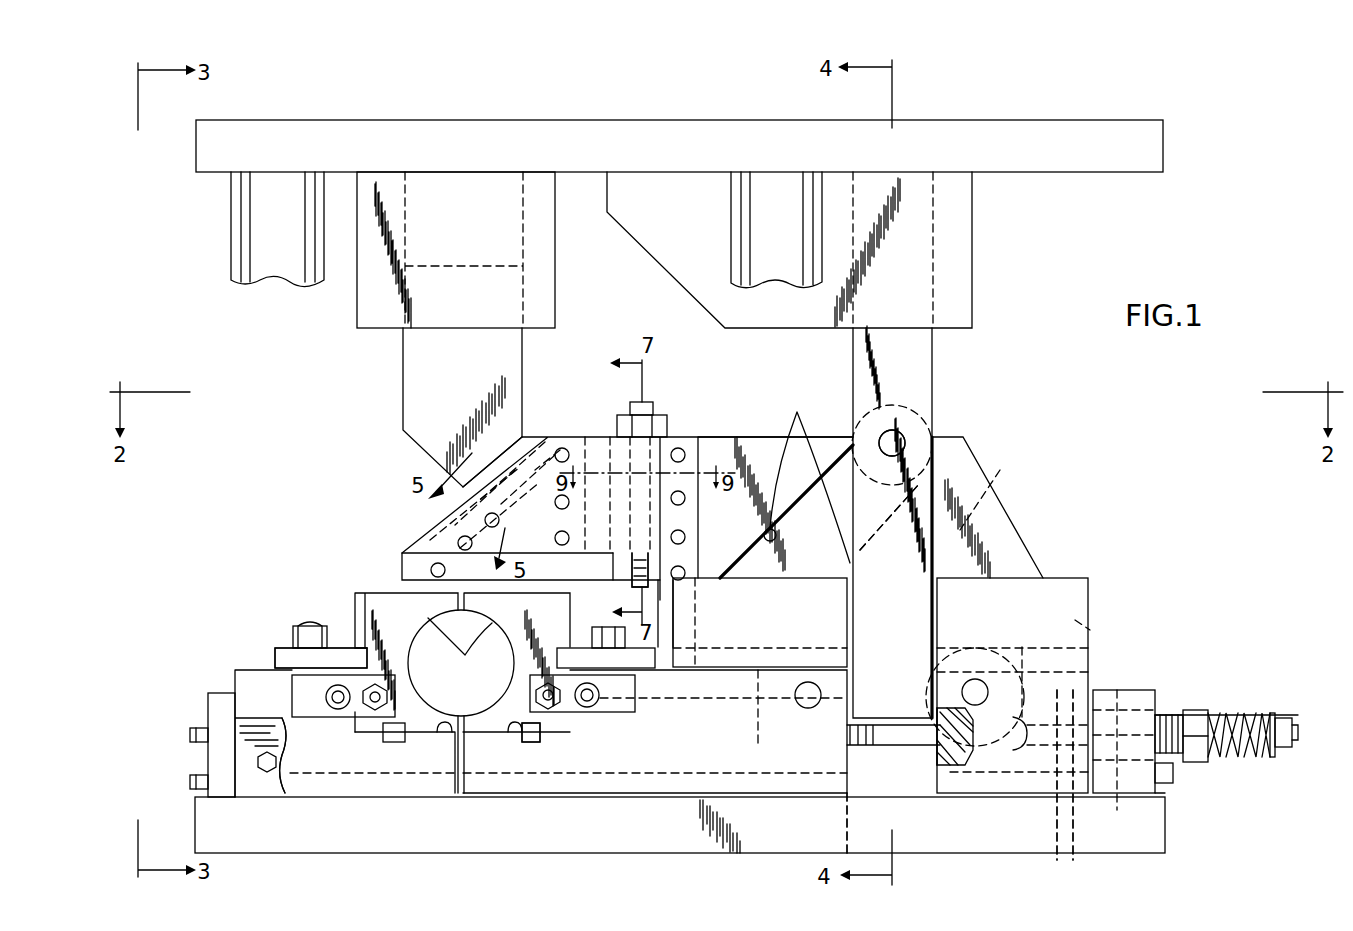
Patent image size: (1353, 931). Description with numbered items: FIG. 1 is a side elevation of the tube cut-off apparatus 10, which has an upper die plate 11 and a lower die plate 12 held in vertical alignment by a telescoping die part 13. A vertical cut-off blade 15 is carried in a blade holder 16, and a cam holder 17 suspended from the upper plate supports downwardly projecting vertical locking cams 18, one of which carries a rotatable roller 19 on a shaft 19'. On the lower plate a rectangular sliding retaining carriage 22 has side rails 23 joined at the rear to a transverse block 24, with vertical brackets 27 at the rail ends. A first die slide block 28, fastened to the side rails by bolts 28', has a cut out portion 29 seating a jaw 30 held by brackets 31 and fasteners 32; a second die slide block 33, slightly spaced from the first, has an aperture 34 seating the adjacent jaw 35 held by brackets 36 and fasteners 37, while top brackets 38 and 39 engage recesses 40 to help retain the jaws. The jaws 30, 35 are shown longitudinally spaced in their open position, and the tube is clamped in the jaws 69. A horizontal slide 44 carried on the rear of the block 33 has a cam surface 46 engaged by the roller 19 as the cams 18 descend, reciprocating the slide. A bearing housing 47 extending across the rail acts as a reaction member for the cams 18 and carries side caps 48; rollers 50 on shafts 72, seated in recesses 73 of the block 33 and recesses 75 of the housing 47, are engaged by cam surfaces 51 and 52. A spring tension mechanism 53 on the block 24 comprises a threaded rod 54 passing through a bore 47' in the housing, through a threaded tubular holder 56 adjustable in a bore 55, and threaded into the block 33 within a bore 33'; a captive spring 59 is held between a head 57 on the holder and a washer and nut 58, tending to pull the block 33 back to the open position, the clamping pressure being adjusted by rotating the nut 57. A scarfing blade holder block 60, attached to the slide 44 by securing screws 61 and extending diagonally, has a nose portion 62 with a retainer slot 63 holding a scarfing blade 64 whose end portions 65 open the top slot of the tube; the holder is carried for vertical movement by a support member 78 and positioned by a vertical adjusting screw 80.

The tube cutting apparatus 10 is at (1028, 474).
The upper die plate 11 is at (1110, 134).
The lower die plate 12 is at (1157, 838).
The telescoping die part 13 is at (265, 235).
The vertical cut-off blade 15 is at (418, 382).
The blade holder 16 is at (555, 262).
The cam holder 17 is at (960, 276).
The vertical locking cams 18 is at (917, 365).
The rotatable bearing or roller 19 is at (939, 437).
The shaft 19' is at (958, 443).
The sliding retaining frame carriage 22 is at (240, 753).
The side rails 23 is at (257, 777).
The end rail or transverse block 24 is at (1120, 695).
The vertical brackets 27 is at (218, 708).
The first die slide block 28 is at (316, 705).
The bolts 28' is at (294, 802).
The cut out portion 29 is at (437, 740).
The jaws 30 is at (383, 575).
The brackets 31 is at (293, 690).
The fasteners 32 is at (375, 710).
The second die slide block 33 is at (655, 755).
The bore 33' is at (863, 824).
The aperture 34 is at (517, 732).
The jaws 35 is at (487, 727).
The brackets 36 is at (610, 703).
The fasteners 37 is at (583, 703).
The top bracket 38 is at (285, 657).
The top bracket 39 is at (640, 662).
The recesses 40 is at (352, 650).
The horizontal slide 44 is at (745, 433).
The recess track or cam surface 46 is at (807, 473).
The bearing housing 47 is at (1041, 661).
The bore 47' is at (918, 773).
The side caps or blocks 48 is at (990, 588).
The rollers 50 is at (760, 732).
The cam surface 51 is at (755, 723).
The cam surface 52 is at (848, 572).
The spring tension mechanism 53 is at (1268, 770).
The threaded rod 54 is at (1272, 718).
The bore 55 is at (1135, 818).
The threaded tubular holder 56 is at (1168, 715).
The head or nut 57 is at (1198, 755).
The washer and nut 58 is at (1280, 718).
The captive spring 59 is at (1232, 713).
The scarfing blade holder block 60 is at (602, 452).
The securing screws 61 is at (686, 494).
The nose portion 62 is at (420, 530).
The scarfing blade retainer slot 63 is at (552, 448).
The scarfing blade 64 is at (495, 470).
The scarfing blade portions 65 is at (512, 430).
The jaws 69 is at (461, 663).
The shafts 72 is at (923, 693).
The recesses 73 is at (817, 770).
The recesses 75 is at (1097, 613).
The support member 78 is at (655, 415).
The vertical adjusting screw 80 is at (652, 563).